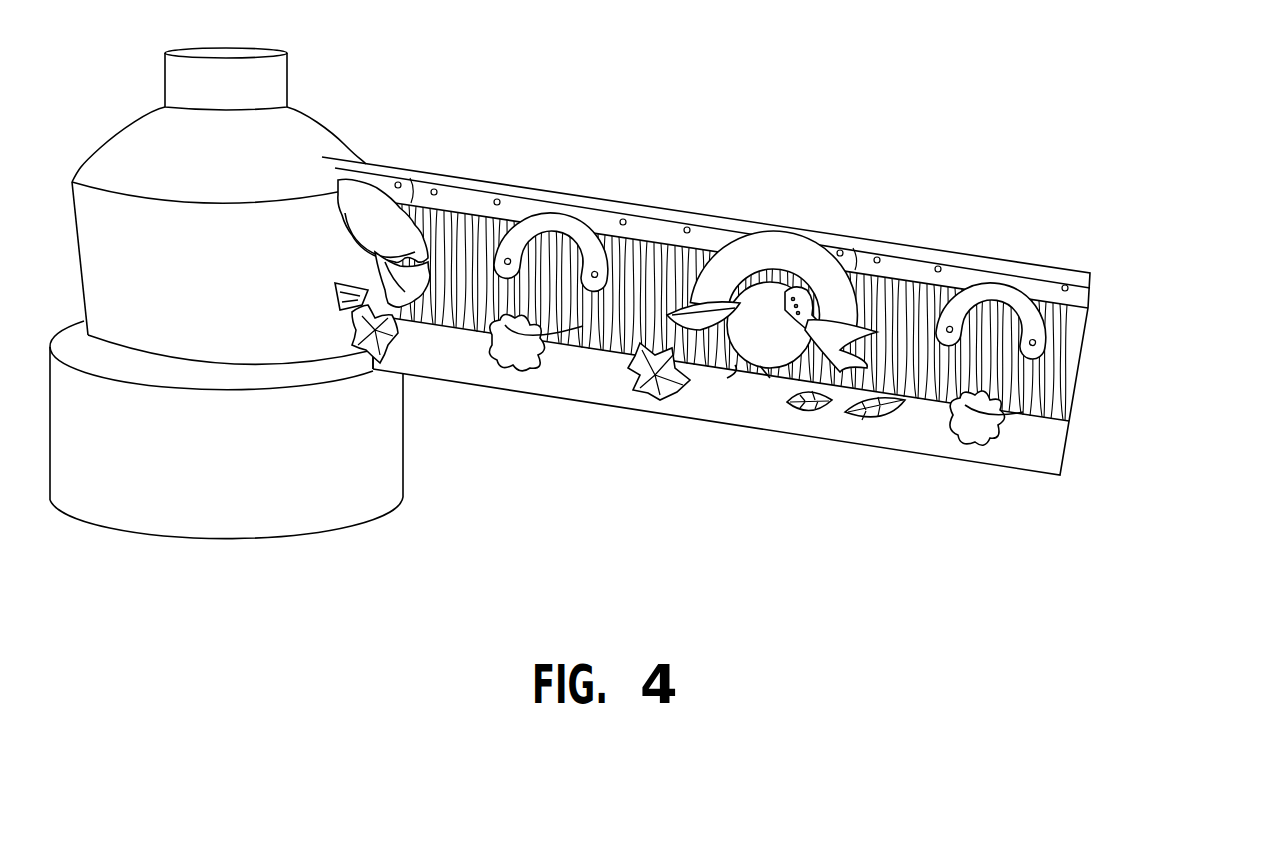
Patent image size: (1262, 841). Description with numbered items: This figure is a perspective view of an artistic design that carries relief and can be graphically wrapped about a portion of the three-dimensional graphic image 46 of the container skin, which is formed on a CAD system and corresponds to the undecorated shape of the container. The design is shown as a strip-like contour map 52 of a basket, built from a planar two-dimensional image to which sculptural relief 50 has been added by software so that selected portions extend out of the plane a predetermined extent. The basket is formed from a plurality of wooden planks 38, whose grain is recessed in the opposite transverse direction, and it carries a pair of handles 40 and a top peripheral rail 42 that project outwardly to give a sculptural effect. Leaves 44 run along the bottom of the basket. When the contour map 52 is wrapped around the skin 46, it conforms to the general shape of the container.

The wooden planks 38 is at (607, 330).
The handles 40 is at (1023, 293).
The top peripheral rail 42 is at (1083, 288).
The leaves 44 is at (668, 388).
The three-dimensional graphic image of the skin of the container 46 is at (226, 280).
The sculptural relief 50 is at (762, 352).
The contour map 52 is at (1083, 275).